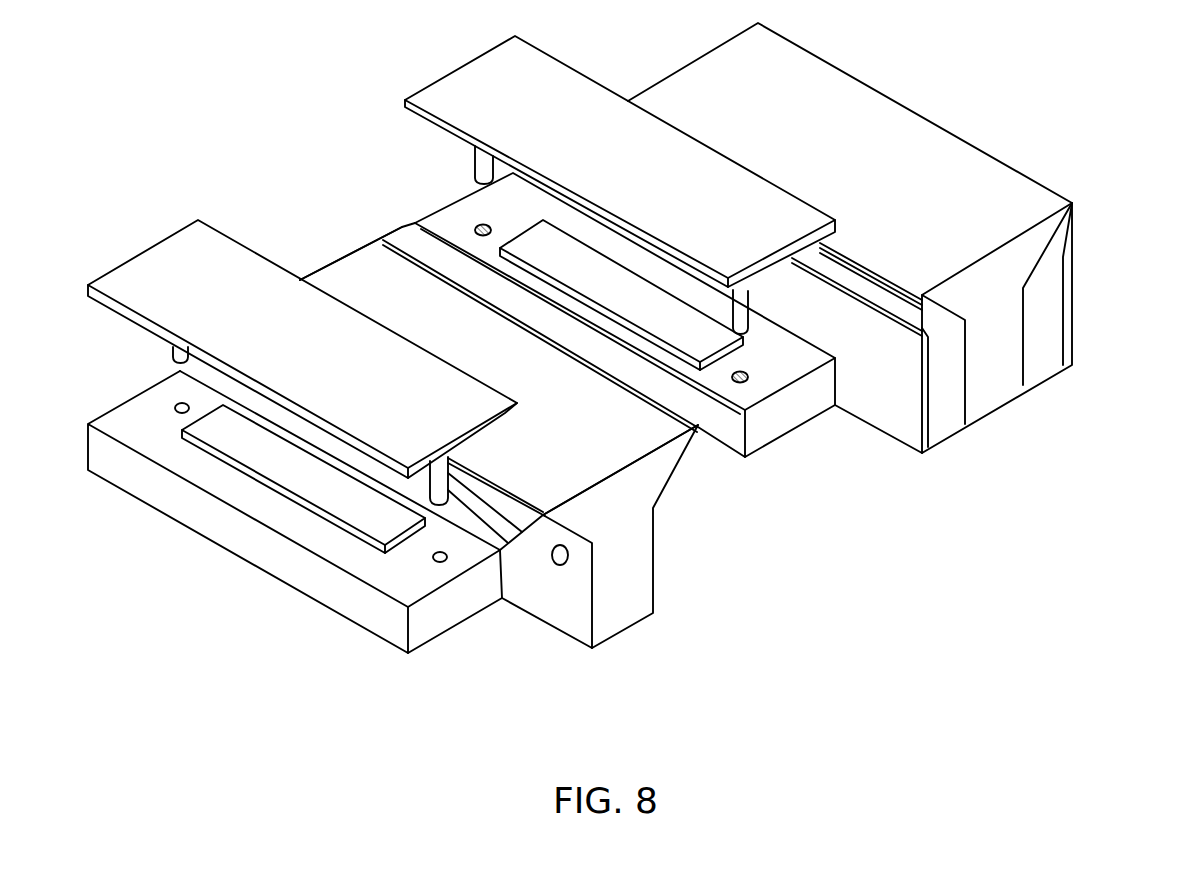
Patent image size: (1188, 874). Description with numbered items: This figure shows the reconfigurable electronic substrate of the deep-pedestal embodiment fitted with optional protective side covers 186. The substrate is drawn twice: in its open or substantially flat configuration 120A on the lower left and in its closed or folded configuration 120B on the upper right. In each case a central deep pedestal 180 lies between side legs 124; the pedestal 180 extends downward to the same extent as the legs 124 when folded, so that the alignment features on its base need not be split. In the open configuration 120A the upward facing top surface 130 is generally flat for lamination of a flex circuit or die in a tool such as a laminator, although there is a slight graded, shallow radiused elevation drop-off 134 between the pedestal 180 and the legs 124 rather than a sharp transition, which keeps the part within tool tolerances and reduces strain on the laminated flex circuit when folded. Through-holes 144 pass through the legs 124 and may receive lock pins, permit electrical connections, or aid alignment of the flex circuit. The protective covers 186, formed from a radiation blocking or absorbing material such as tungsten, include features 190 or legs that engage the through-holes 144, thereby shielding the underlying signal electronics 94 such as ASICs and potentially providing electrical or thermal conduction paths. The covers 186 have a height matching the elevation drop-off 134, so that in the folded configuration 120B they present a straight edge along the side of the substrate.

The open configuration of the substrate 120A is at (402, 382).
The closed configuration of the substrate 120B is at (1025, 112).
The deep pedestal 180 is at (708, 87).
The protective cover 186 is at (237, 262).
The elevation drop-off 134 is at (392, 218).
The through-hole 144 is at (174, 407).
The signal electronics 94 is at (300, 478).
The side leg 124 is at (348, 597).
The engaging feature 190 is at (440, 503).
The top surface 130 is at (617, 447).